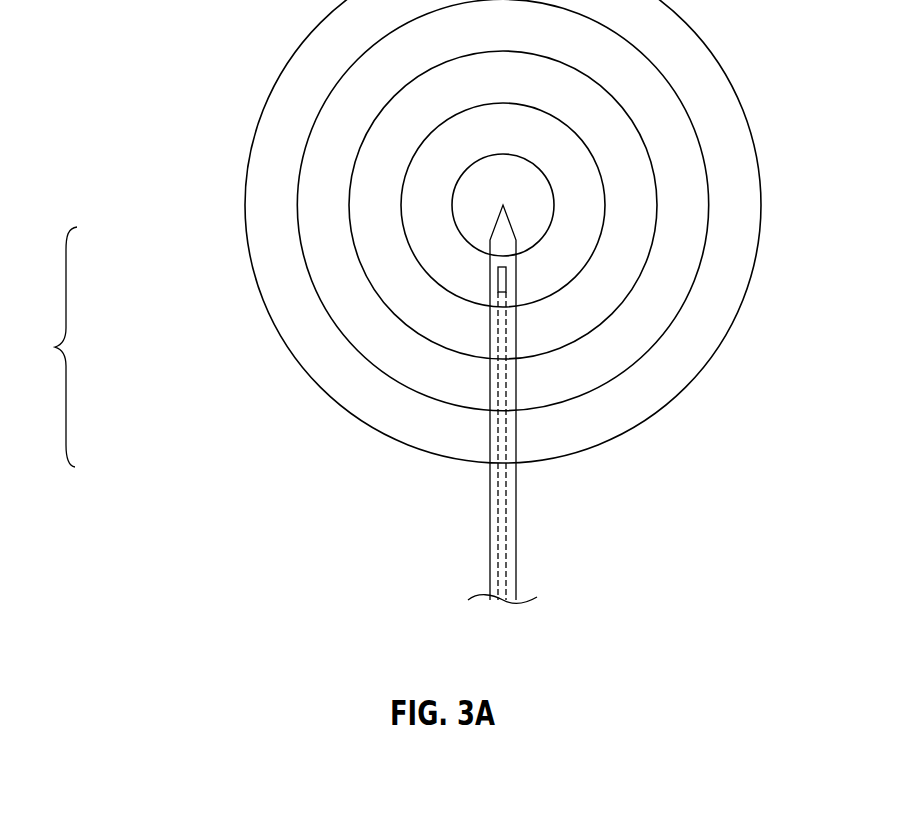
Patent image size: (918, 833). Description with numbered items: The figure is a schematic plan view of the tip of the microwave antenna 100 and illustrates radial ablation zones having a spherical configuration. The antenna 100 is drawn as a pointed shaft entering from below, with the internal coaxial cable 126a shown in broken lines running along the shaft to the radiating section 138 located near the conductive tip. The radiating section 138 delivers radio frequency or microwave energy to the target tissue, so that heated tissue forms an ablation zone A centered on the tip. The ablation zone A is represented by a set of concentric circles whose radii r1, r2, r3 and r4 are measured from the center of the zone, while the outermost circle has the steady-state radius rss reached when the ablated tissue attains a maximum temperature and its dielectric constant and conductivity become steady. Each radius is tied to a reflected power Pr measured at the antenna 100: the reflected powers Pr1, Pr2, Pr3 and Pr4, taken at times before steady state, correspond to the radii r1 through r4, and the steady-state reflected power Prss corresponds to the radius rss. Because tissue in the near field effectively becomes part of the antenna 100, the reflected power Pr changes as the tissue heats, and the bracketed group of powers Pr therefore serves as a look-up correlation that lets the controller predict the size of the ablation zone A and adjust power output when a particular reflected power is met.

The microwave antenna 100 is at (514, 557).
The internal coaxial cable 126a is at (497, 506).
The radiating section 138 is at (508, 281).
The first ablation zone radius r1 is at (516, 205).
The second ablation zone radius r2 is at (516, 205).
The third ablation zone radius r3 is at (517, 205).
The fourth ablation zone radius r4 is at (518, 205).
The steady-state ablation zone radius rss is at (525, 231).
The first reflected power Pr1 is at (452, 205).
The second reflected power Pr2 is at (413, 262).
The third reflected power Pr3 is at (393, 315).
The fourth reflected power Pr4 is at (374, 368).
The steady-state reflected power Prss is at (357, 422).
The reflected power Pr is at (53, 347).
The ablation zone A is at (676, 463).